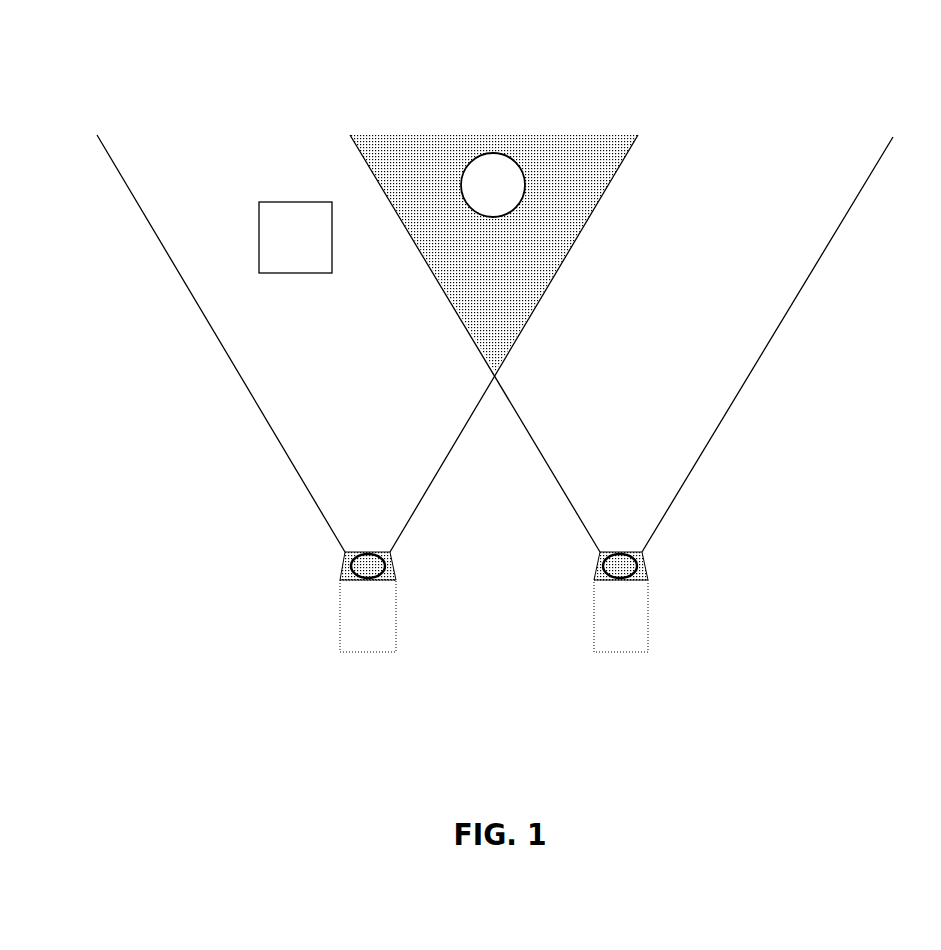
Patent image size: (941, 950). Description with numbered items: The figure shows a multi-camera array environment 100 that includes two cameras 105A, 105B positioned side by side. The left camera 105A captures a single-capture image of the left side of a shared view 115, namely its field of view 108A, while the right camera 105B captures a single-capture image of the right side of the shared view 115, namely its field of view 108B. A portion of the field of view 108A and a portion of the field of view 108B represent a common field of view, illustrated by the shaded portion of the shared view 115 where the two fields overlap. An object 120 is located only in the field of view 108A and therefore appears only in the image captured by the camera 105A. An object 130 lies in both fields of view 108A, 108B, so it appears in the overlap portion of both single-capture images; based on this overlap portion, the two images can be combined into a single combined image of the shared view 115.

The multi-camera array environment 100 is at (153, 47).
The camera 105A is at (368, 652).
The camera 105B is at (620, 652).
The field of view 108A is at (97, 99).
The field of view 108B is at (347, 118).
The shared view 115 is at (97, 82).
The object 120 is at (295, 237).
The object 130 is at (494, 253).